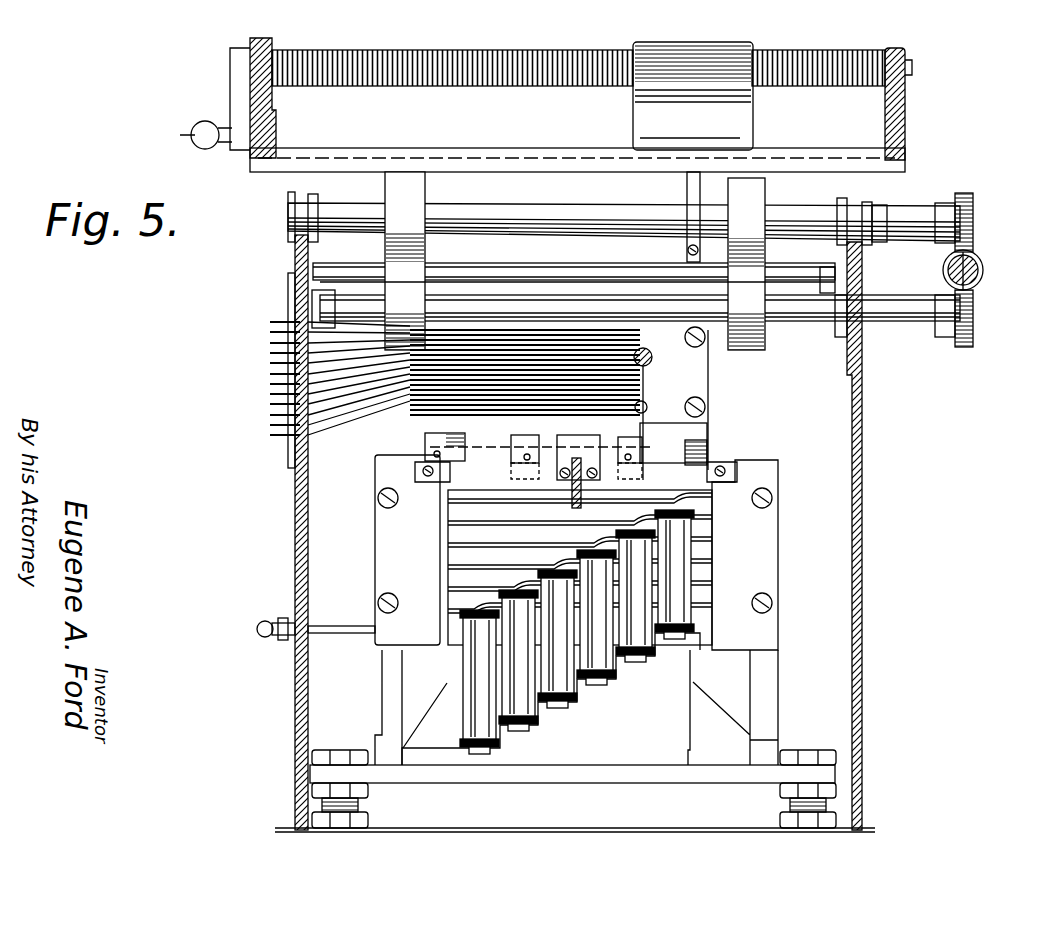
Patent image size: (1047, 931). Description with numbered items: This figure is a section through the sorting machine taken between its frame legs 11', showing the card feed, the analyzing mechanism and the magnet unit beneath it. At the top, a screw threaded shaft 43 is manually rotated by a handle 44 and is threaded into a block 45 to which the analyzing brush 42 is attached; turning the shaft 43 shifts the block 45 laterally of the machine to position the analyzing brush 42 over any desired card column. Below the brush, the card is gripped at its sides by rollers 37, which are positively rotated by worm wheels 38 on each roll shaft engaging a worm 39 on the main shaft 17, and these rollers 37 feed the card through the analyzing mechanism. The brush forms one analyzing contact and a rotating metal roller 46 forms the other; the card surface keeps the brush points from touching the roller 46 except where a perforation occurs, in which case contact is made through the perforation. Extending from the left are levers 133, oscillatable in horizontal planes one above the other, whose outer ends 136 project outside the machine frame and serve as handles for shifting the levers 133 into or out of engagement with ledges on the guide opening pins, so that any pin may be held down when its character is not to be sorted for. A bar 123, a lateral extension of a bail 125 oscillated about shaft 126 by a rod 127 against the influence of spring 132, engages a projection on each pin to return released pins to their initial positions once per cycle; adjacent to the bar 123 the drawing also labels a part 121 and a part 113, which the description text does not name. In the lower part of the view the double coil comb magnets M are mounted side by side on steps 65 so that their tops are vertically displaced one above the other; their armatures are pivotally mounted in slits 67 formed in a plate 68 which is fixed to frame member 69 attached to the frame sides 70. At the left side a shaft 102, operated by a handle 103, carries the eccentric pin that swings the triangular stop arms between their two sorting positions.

The handle 44 is at (190, 126).
The screw threaded shaft 43 is at (465, 68).
The block 45 is at (640, 114).
The analyzing brush 42 is at (688, 188).
The worm wheels 38 is at (968, 224).
The worm 39 is at (980, 262).
The main shaft 17 is at (978, 276).
The rollers 37 is at (405, 290).
The rotating metal roller 46 is at (372, 284).
The other end of the lever 136 is at (270, 374).
The levers 133 is at (385, 395).
The rod 127 is at (652, 360).
The bail 125 is at (648, 385).
The spring 132 is at (652, 410).
The plate 68 is at (718, 458).
The slits 67 is at (695, 515).
The frame member 69 is at (770, 510).
The shaft 126 is at (480, 448).
The bar 123 is at (548, 447).
The block 121 is at (588, 448).
The pin 113 is at (565, 492).
The shaft 102 is at (332, 626).
The handle 103 is at (262, 625).
The frame sides 70 is at (766, 690).
The steps 65 is at (560, 712).
The comb magnet M is at (668, 638).
The frame legs 11' is at (613, 532).